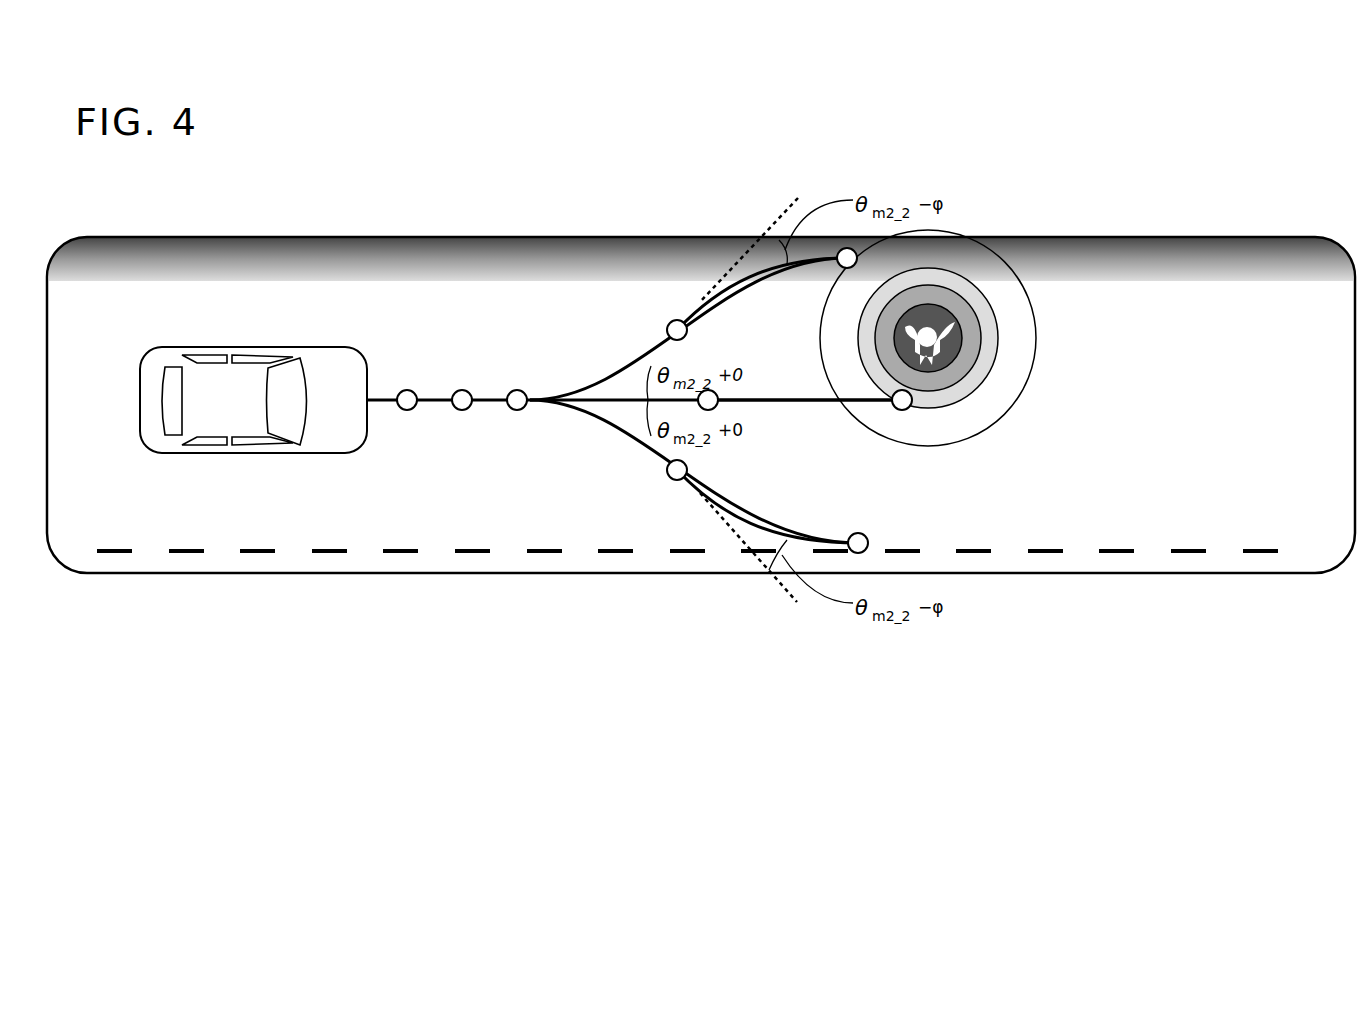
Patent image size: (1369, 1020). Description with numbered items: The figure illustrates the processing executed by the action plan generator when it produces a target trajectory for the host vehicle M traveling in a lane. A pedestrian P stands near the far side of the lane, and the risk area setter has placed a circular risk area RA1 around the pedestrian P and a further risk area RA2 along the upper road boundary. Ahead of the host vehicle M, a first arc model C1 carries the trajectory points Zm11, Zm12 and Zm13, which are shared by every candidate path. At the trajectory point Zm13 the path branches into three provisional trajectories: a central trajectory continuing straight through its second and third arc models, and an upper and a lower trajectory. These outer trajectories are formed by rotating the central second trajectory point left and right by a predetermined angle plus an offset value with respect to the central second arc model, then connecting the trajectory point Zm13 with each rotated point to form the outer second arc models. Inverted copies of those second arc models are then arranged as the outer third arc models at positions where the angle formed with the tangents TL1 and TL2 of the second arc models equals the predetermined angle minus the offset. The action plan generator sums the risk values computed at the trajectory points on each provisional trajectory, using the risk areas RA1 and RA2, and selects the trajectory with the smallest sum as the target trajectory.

The host vehicle M is at (250, 346).
The risk area RA2 is at (1265, 249).
The risk area RA1 is at (1037, 333).
The pedestrian P is at (965, 345).
The arc model C1 is at (487, 398).
The trajectory point Zm11 is at (409, 415).
The trajectory point Zm12 is at (464, 415).
The trajectory point Zm13 is at (519, 415).
The tangent TL1 is at (783, 206).
The tangent TL2 is at (782, 590).